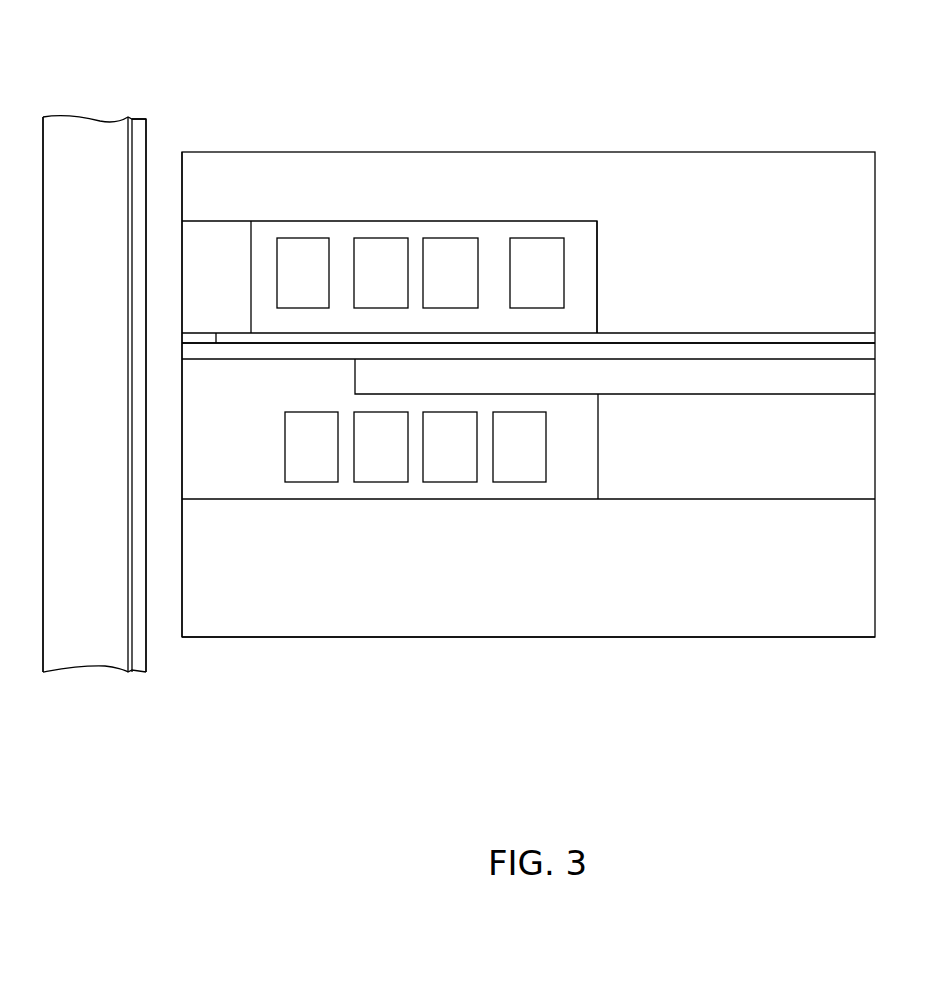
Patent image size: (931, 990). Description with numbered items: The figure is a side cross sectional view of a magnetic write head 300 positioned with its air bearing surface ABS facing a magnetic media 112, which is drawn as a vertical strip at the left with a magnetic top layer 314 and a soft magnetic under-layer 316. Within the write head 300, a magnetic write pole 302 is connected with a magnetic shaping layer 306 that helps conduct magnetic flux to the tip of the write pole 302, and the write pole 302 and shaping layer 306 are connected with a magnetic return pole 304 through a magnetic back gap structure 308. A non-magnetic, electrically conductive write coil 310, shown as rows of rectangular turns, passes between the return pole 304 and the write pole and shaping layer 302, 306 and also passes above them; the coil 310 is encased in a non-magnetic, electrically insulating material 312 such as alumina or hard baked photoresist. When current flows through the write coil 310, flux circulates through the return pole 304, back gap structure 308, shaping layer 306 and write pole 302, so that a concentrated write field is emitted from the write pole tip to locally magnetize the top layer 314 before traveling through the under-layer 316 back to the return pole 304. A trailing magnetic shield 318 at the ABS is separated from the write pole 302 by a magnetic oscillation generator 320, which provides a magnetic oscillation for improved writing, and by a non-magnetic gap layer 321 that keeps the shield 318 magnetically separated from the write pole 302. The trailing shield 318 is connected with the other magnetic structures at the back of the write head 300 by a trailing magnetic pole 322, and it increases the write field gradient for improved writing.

The magnetic media 112 is at (113, 106).
The magnetic top layer 314 is at (134, 120).
The soft magnetic under-layer 316 is at (112, 134).
The magnetic write head 300 is at (459, 152).
The magnetic write pole 302 is at (633, 352).
The magnetic return pole 304 is at (530, 567).
The magnetic shaping layer 306 is at (590, 377).
The magnetic back gap structure 308 is at (757, 442).
The write coil 310 is at (313, 247).
The electrically insulating material 312 is at (570, 240).
The trailing magnetic shield 318 is at (238, 257).
The magnetic oscillation generator 320 is at (192, 340).
The non-magnetic gap layer 321 is at (562, 340).
The trailing magnetic pole 322 is at (658, 257).
The air bearing surface ABS is at (182, 277).